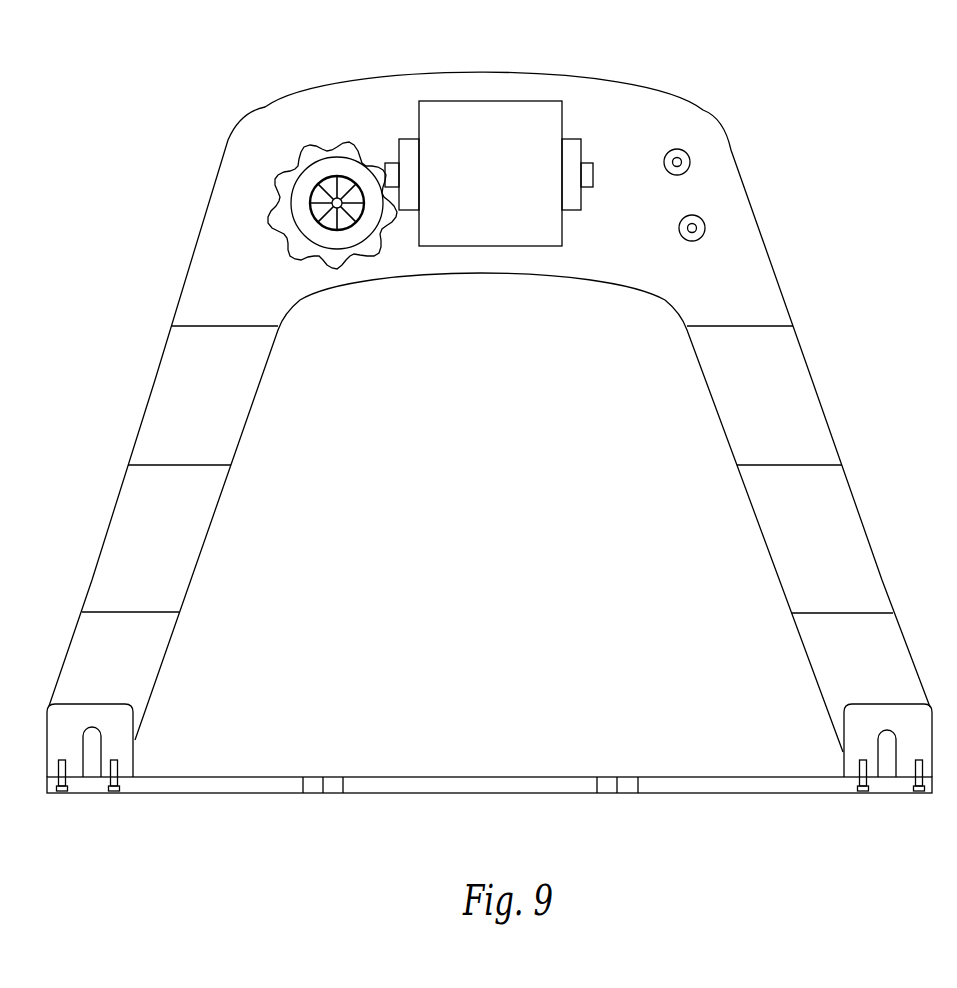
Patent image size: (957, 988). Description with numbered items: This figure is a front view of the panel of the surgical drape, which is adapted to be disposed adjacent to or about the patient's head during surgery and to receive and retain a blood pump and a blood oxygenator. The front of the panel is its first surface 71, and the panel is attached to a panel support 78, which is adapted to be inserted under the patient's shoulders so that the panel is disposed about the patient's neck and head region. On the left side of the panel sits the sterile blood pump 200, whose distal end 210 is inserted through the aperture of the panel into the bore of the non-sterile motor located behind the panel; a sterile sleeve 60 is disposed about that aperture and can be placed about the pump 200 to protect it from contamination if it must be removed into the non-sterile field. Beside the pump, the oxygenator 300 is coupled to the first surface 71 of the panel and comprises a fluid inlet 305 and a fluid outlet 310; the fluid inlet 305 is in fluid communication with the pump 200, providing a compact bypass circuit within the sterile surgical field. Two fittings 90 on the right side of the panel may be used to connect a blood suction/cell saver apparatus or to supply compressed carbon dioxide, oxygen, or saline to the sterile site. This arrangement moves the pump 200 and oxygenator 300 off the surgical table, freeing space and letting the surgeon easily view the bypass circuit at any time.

The sterile sleeve 60 is at (317, 148).
The first surface 71 is at (657, 274).
The panel support 78 is at (470, 778).
The fittings 90 is at (688, 157).
The blood pump 200 is at (302, 203).
The distal end 210 is at (337, 203).
The blood oxygenator 300 is at (473, 246).
The fluid inlet 305 is at (391, 162).
The fluid outlet 310 is at (588, 188).